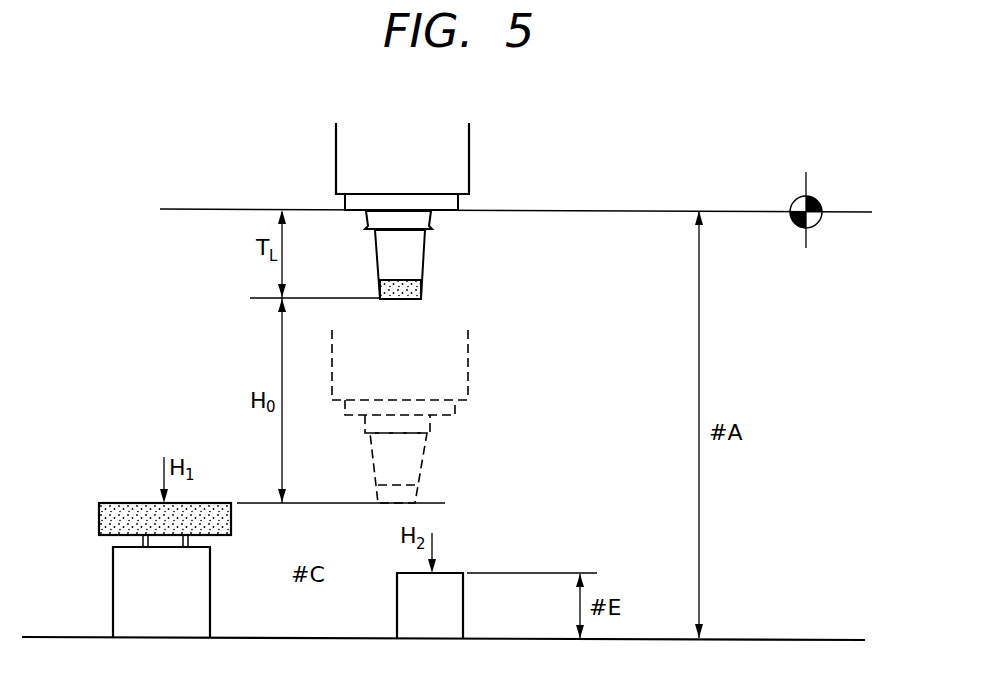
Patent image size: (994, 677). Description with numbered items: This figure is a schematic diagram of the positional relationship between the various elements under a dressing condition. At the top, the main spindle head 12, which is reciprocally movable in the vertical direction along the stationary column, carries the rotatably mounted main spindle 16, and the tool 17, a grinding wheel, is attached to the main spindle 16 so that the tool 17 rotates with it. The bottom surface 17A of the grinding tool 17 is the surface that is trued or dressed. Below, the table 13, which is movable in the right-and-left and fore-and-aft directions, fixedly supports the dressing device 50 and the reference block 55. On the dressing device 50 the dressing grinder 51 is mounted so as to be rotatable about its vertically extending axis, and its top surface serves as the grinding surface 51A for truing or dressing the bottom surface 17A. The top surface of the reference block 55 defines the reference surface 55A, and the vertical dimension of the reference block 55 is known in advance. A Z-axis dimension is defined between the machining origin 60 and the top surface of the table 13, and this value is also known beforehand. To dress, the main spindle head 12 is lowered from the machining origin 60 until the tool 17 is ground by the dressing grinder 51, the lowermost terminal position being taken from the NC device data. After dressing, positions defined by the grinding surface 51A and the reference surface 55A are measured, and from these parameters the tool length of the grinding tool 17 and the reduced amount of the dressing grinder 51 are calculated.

The main spindle head 12 is at (462, 142).
The table 13 is at (793, 639).
The main spindle 16 is at (456, 205).
The tool 17 is at (416, 245).
The bottom surface 17A is at (415, 299).
The dressing device 50 is at (117, 575).
The dressing grinder 51 is at (99, 520).
The grinding surface 51A is at (120, 503).
The reference block 55 is at (407, 615).
The reference surface 55A is at (447, 572).
The machining origin 60 is at (794, 203).